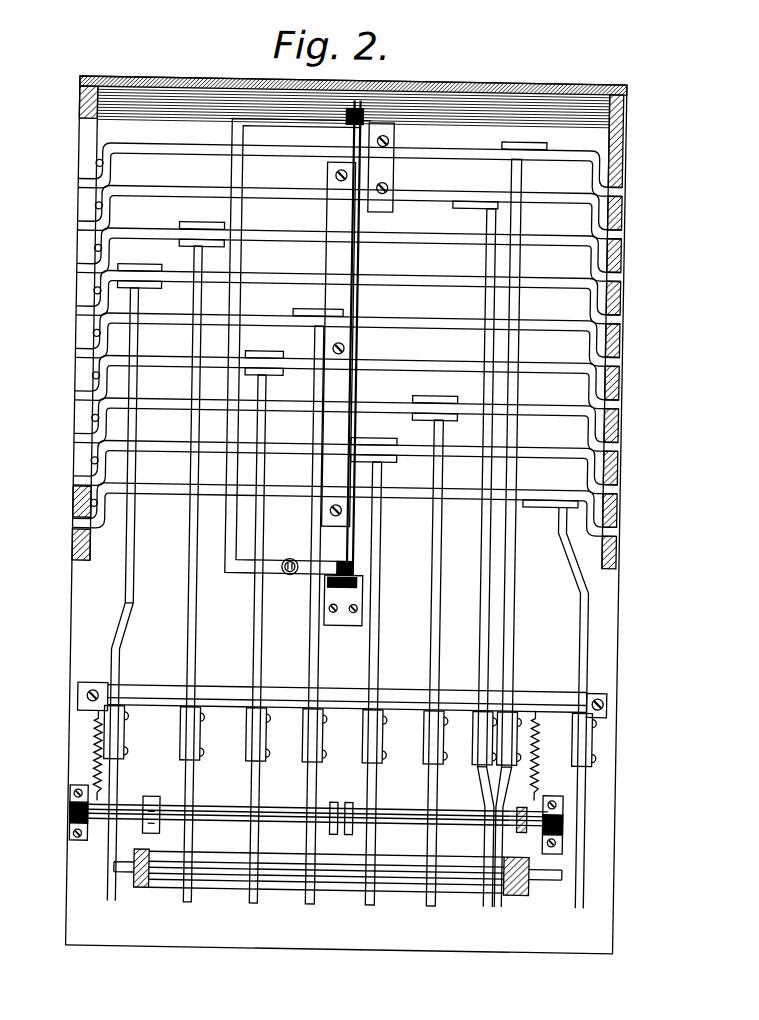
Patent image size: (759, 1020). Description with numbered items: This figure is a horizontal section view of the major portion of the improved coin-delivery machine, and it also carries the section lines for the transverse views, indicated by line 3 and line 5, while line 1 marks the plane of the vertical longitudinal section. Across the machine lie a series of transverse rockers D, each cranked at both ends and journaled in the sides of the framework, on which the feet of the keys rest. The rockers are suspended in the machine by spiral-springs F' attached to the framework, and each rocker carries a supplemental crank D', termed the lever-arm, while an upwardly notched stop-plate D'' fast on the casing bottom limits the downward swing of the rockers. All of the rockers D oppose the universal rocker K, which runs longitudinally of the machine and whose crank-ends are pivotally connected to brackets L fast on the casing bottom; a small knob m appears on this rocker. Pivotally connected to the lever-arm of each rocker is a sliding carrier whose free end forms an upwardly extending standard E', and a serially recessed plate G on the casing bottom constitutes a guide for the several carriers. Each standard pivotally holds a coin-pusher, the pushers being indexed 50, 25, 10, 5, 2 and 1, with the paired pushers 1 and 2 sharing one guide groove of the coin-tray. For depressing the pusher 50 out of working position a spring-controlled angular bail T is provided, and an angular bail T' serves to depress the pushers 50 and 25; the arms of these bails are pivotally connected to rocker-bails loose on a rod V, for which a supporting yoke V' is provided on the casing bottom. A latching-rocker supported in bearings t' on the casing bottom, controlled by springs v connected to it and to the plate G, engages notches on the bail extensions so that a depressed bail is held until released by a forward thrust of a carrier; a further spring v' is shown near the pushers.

The transverse rocker D is at (348, 339).
The supplemental crank D' is at (349, 322).
The stop-plate D'' is at (362, 344).
The universal rocker K is at (244, 213).
The bracket L is at (422, 46).
The knob m is at (296, 593).
The standard E' is at (374, 531).
The serially recessed plate G is at (231, 706).
The controlling spring v is at (336, 822).
The spring v' is at (382, 914).
The bearing t' is at (319, 819).
The rod V is at (318, 807).
The supporting yoke V' is at (338, 858).
The angular bail T is at (152, 798).
The angular bail T' is at (371, 811).
The spiral-spring F' is at (85, 431).
The coin-pusher 1 is at (353, 955).
The coin-pusher 2 is at (442, 897).
The section line 3 is at (693, 272).
The coin-pusher 5 is at (672, 778).
The coin-pusher 10 is at (264, 899).
The coin-pusher 25 is at (203, 898).
The coin-pusher 50 is at (126, 898).